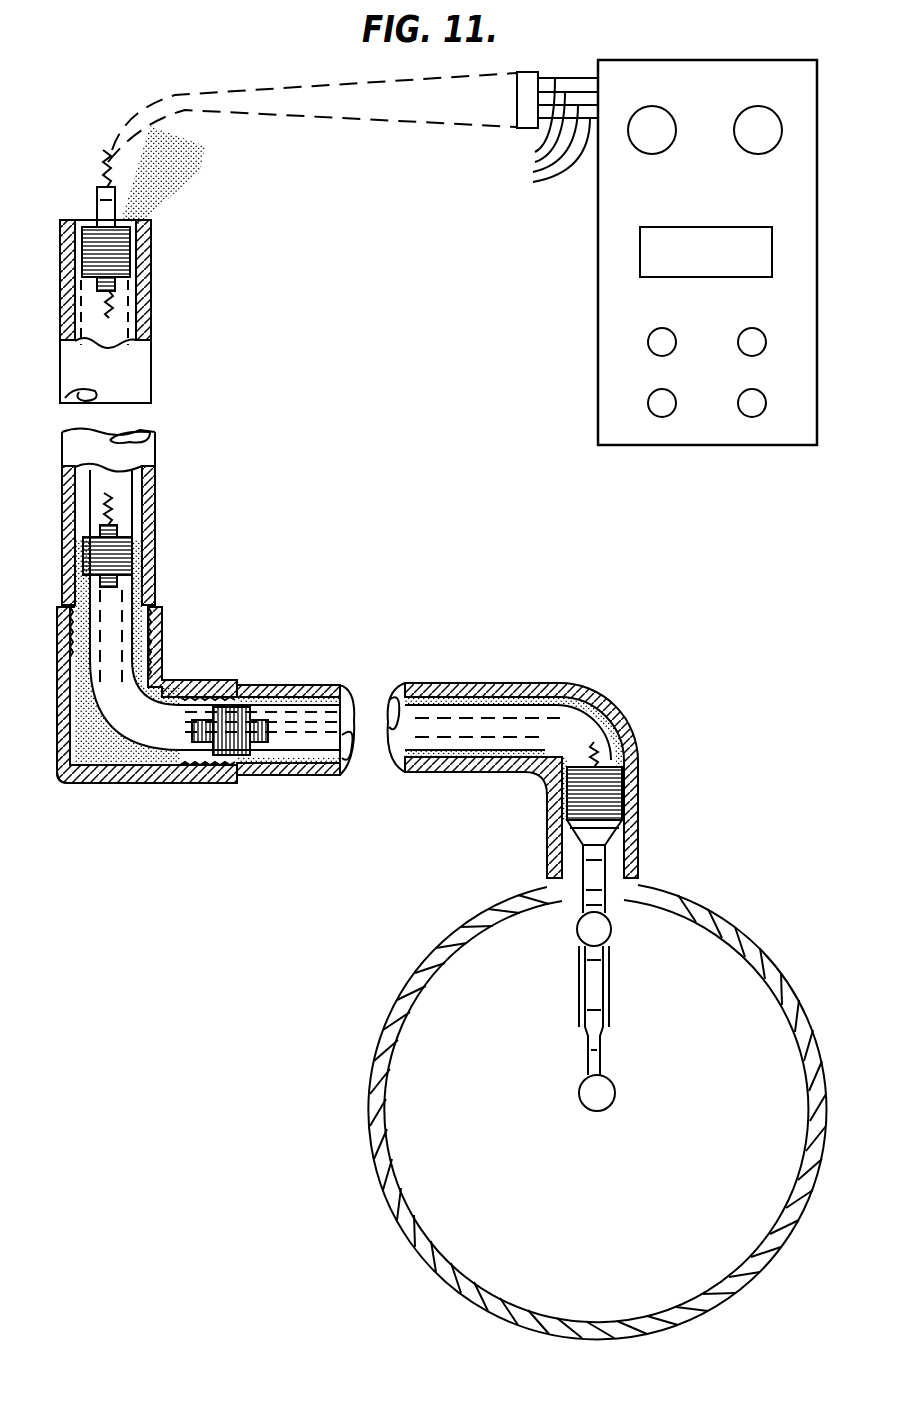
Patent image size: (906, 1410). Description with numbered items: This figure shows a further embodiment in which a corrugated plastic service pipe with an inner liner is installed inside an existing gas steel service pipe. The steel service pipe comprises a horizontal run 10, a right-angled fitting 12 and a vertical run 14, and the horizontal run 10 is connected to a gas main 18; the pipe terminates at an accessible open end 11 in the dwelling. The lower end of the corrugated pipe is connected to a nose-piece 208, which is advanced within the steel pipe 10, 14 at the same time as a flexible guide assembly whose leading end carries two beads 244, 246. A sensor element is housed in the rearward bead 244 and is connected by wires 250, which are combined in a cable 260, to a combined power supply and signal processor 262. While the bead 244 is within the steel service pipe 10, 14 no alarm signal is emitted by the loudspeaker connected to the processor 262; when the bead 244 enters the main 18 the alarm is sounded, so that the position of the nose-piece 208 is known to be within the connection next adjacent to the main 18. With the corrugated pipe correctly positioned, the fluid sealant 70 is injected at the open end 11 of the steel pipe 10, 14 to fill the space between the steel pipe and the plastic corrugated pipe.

The horizontal run 10 is at (470, 690).
The accessible end 11 is at (68, 208).
The right-angled fitting 12 is at (150, 672).
The vertical run 14 is at (150, 517).
The gas main 18 is at (707, 912).
The fluid sealant 70 is at (176, 180).
The nose-piece 208 is at (610, 830).
The rearward bead 244 is at (608, 932).
The bead 246 is at (614, 1091).
The wires 250 is at (532, 135).
The cable 260 is at (520, 97).
The combined power supply and signal processor 262 is at (614, 296).